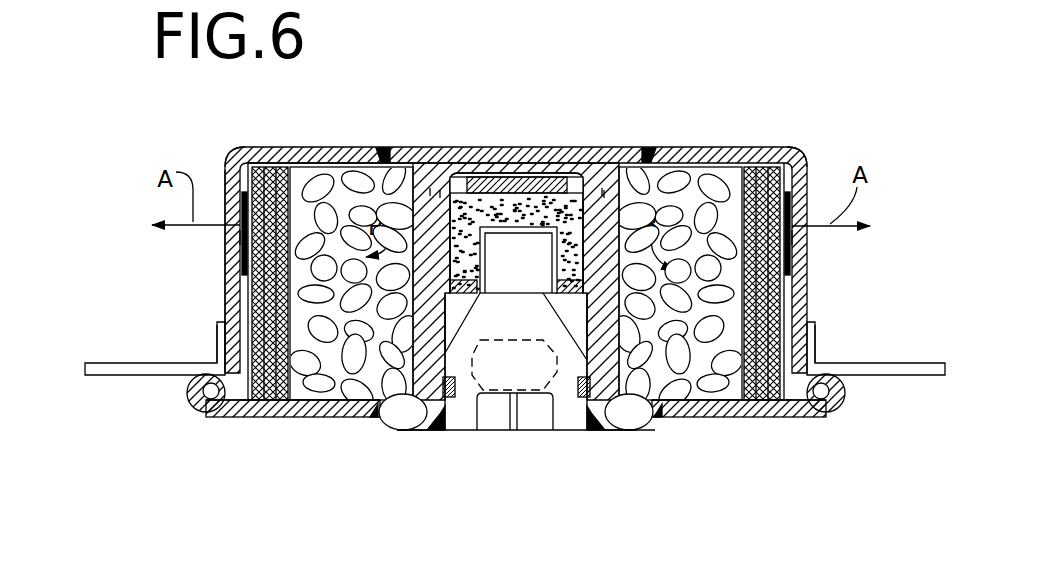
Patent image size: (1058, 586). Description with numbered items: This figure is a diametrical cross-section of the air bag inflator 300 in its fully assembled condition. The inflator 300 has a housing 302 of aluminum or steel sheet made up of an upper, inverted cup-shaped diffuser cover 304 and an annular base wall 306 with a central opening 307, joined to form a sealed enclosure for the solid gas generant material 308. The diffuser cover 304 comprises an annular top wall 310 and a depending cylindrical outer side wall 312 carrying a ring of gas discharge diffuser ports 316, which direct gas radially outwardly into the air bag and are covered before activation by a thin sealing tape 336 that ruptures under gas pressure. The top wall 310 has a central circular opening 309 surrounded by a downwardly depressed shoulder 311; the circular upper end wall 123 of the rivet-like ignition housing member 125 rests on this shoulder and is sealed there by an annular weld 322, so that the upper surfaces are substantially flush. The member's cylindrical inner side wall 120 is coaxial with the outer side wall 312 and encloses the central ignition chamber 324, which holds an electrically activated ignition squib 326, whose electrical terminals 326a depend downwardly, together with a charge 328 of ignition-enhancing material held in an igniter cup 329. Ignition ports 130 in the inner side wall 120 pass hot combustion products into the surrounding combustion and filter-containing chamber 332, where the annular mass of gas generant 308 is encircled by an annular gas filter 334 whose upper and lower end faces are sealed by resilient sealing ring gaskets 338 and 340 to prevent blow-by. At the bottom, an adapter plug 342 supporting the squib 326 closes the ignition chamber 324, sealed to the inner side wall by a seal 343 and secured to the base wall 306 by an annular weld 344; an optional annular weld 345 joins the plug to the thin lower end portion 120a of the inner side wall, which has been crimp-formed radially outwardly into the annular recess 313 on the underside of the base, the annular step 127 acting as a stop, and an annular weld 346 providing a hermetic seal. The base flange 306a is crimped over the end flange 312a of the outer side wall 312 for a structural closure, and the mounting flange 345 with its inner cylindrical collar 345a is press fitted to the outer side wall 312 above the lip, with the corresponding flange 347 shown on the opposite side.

The air bag inflator 300 is at (576, 573).
The housing 302 is at (200, 273).
The diffuser cover 304 is at (799, 149).
The base wall 306 is at (231, 418).
The upwardly projecting flange 306a is at (192, 377).
The central opening 307 is at (452, 432).
The gas generant material 308 is at (327, 252).
The circular opening 309 is at (411, 160).
The annular top wall 310 is at (290, 148).
The shoulder 311 is at (612, 205).
The outer side wall 312 is at (247, 303).
The end flange 312a is at (203, 405).
The annular recess 313 is at (385, 432).
The gas discharge diffuser ports 316 is at (243, 253).
The annular weld 322 is at (380, 155).
The ignition chamber 324 is at (536, 160).
The ignition squib 326 is at (557, 432).
The electrical terminals 326a is at (513, 432).
The charge of ignition-enhancing material 328 is at (507, 255).
The igniter cup 329 is at (478, 210).
The combustion and filter-containing chamber 332 is at (300, 165).
The annular gas filter 334 is at (247, 307).
The sealing tape 336 is at (238, 238).
The sealing ring gasket 338 is at (258, 151).
The sealing ring gasket 340 is at (283, 402).
The adapter plug 342 is at (567, 350).
The seal 343 is at (580, 400).
The annular weld 344 is at (372, 417).
The mounting flange 345 is at (97, 375).
The inner cylindrical collar 345a is at (217, 342).
The annular weld 346 is at (412, 432).
The mounting flange 347 is at (818, 364).
The inner side wall 120 is at (440, 194).
The lower end portion 120a is at (403, 432).
The upper end wall 123 is at (568, 165).
The ignition housing member 125 is at (558, 175).
The annular step 127 is at (605, 432).
The ignition ports 130 is at (430, 192).